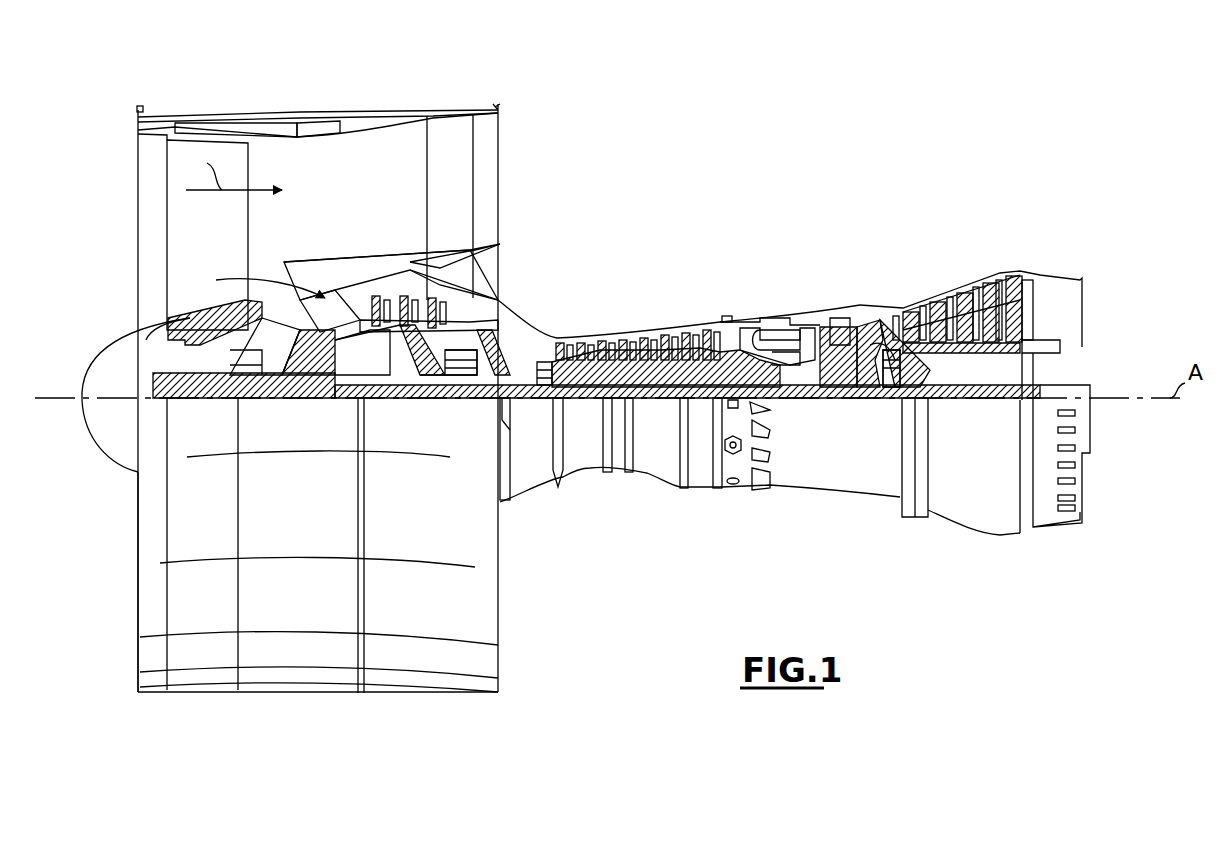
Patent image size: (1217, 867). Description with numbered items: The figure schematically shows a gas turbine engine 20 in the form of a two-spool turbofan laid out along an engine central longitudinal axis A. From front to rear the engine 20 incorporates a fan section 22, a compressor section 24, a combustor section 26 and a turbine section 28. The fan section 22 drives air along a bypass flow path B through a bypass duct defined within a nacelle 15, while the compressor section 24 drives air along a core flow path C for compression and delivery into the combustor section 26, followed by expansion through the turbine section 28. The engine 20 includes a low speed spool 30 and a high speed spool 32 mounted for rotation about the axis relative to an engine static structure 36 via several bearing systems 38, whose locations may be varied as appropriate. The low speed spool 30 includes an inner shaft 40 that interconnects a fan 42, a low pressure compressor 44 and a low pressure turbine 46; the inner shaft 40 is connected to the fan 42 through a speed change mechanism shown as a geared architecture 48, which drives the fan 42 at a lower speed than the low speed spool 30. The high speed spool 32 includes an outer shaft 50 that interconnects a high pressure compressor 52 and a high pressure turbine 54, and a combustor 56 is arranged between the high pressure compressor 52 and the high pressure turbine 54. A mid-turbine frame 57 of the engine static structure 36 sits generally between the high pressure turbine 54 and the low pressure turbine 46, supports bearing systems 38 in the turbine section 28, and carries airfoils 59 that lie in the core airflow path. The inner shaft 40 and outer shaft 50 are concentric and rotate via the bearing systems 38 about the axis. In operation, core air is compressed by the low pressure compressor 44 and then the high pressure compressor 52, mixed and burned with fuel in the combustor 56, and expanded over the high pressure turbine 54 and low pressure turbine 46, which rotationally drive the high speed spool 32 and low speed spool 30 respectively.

The gas turbine engine 20 is at (777, 168).
The nacelle 15 is at (318, 124).
The fan section 22 is at (250, 105).
The fan 42 is at (222, 240).
The low pressure compressor 44 is at (420, 305).
The compressor section 24 is at (550, 303).
The high pressure compressor 52 is at (610, 350).
The high speed spool 32 is at (700, 348).
The combustor section 26 is at (772, 296).
The combustor 56 is at (770, 346).
The high pressure turbine 54 is at (838, 318).
The mid-turbine frame 57 is at (880, 312).
The airfoils 59 is at (898, 350).
The turbine section 28 is at (920, 255).
The low pressure turbine 46 is at (965, 292).
The outer shaft 50 is at (778, 392).
The geared architecture 48 is at (325, 384).
The bearing systems 38 is at (455, 385).
The inner shaft 40 is at (523, 398).
The low speed spool 30 is at (660, 400).
The engine static structure 36 is at (700, 487).